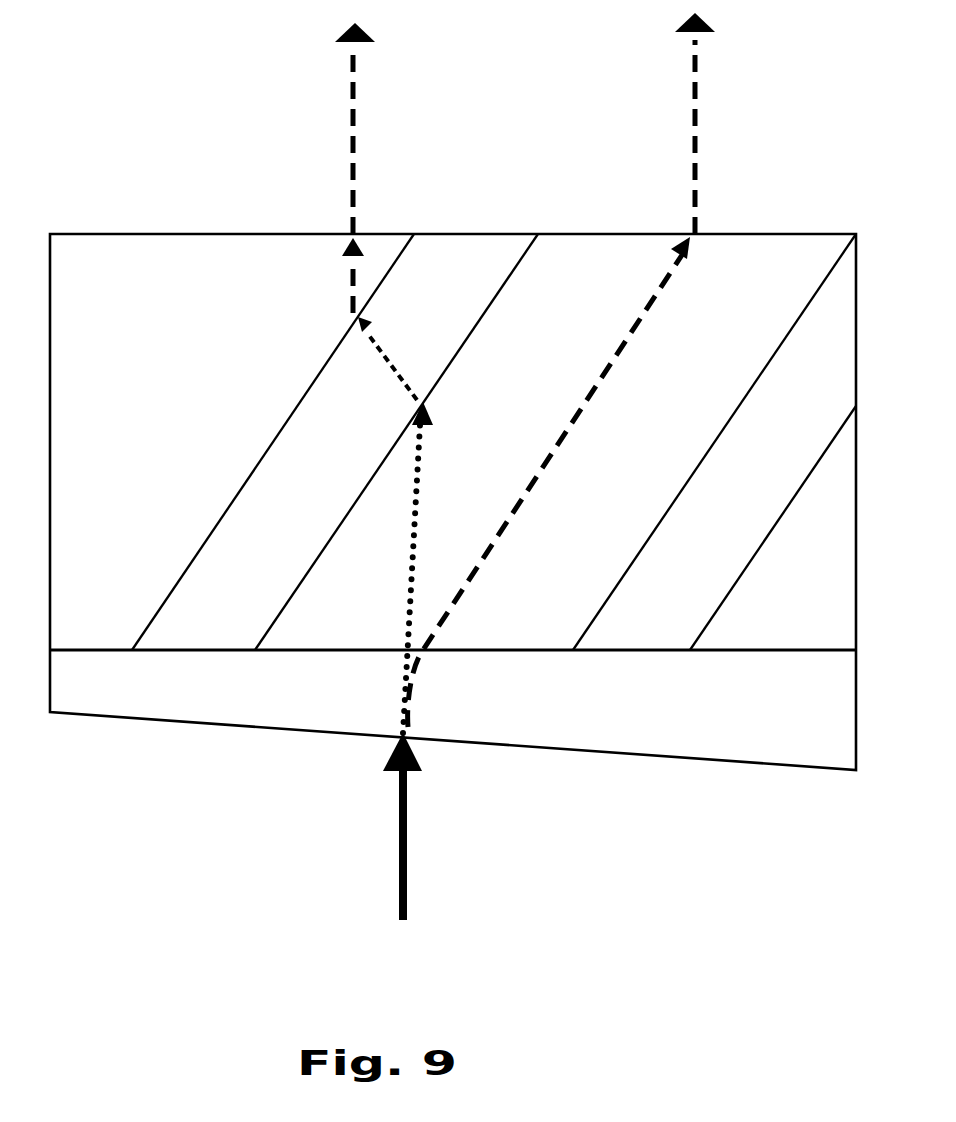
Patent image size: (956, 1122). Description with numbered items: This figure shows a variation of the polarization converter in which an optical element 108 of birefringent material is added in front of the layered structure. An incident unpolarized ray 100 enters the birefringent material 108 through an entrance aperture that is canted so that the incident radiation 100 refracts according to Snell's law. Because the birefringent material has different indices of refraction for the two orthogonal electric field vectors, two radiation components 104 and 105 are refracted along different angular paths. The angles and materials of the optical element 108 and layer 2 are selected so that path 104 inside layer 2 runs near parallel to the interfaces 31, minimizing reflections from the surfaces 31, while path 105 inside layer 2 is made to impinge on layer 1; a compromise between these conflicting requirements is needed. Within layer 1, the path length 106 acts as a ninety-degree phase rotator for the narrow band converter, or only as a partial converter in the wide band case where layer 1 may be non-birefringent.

The layer 1 is at (233, 603).
The layer 2 is at (110, 635).
The interfaces 31 is at (382, 299).
The incident unpolarized ray 100 is at (398, 805).
The radiation component 104 is at (352, 274).
The radiation component 105 is at (418, 497).
The path length 106 is at (403, 383).
The optical element 108 is at (717, 693).